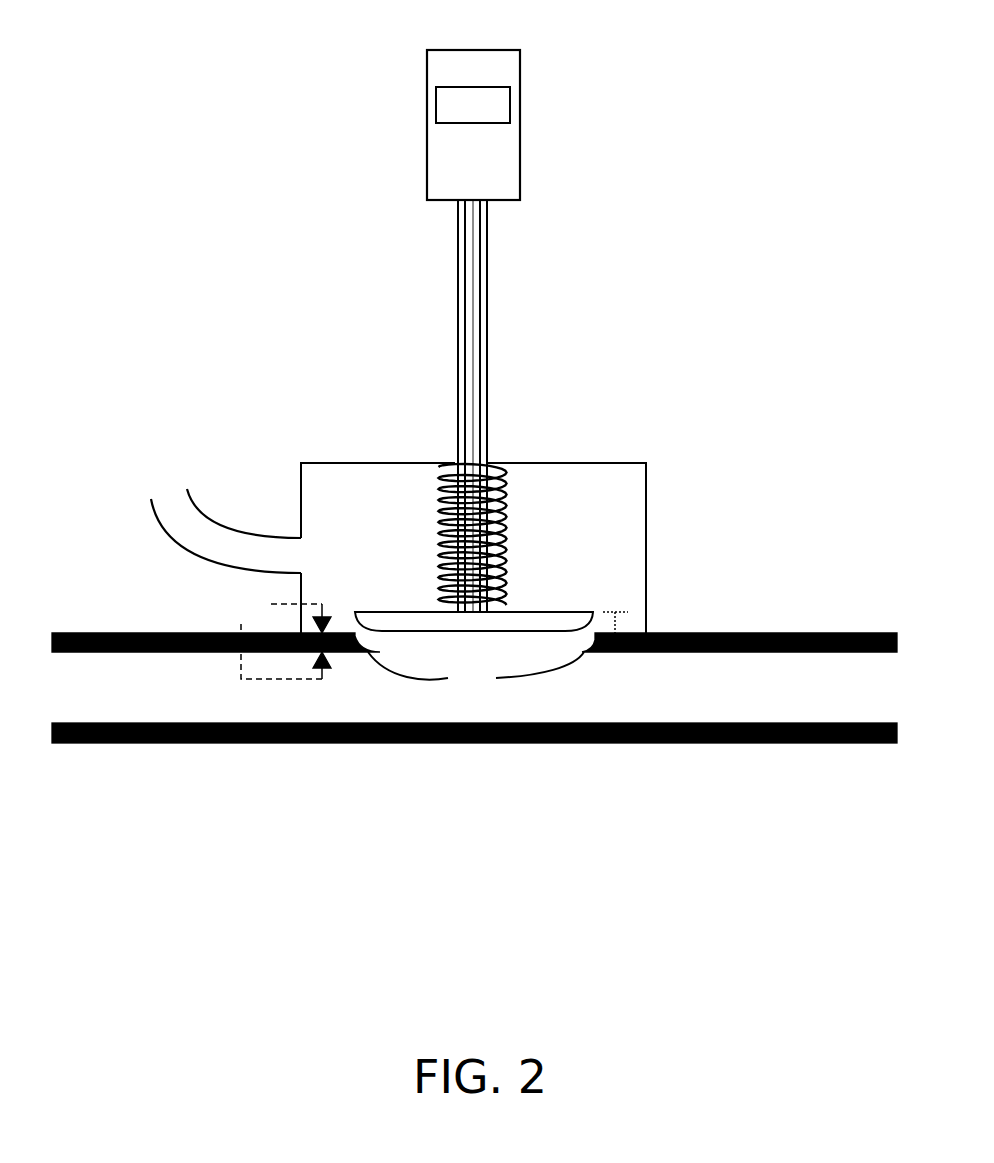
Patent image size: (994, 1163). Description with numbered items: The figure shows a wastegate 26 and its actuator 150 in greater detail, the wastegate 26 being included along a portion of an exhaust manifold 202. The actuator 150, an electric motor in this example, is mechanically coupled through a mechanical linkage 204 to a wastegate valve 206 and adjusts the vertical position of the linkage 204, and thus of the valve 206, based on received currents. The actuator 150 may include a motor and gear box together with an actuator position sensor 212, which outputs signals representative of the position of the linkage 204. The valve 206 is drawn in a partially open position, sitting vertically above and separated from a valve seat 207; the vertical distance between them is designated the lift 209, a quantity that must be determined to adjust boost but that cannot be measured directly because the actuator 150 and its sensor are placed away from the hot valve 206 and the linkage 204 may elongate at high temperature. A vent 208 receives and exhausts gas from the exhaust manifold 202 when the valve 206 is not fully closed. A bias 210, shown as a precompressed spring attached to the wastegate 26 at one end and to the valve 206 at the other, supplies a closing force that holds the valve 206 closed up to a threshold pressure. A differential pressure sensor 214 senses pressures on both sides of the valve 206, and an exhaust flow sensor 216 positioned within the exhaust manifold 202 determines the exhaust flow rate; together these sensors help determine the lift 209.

The actuator 150 is at (500, 50).
The actuator position sensor 212 is at (492, 117).
The mechanical linkage 204 is at (477, 390).
The wastegate 26 is at (617, 402).
The vent 208 is at (213, 515).
The bias 210 is at (508, 542).
The wastegate valve 206 is at (538, 612).
The lift 209 is at (615, 612).
The exhaust manifold 202 is at (764, 633).
The valve seat 207 is at (476, 671).
The differential pressure sensor 214 is at (261, 615).
The exhaust flow sensor 216 is at (839, 700).